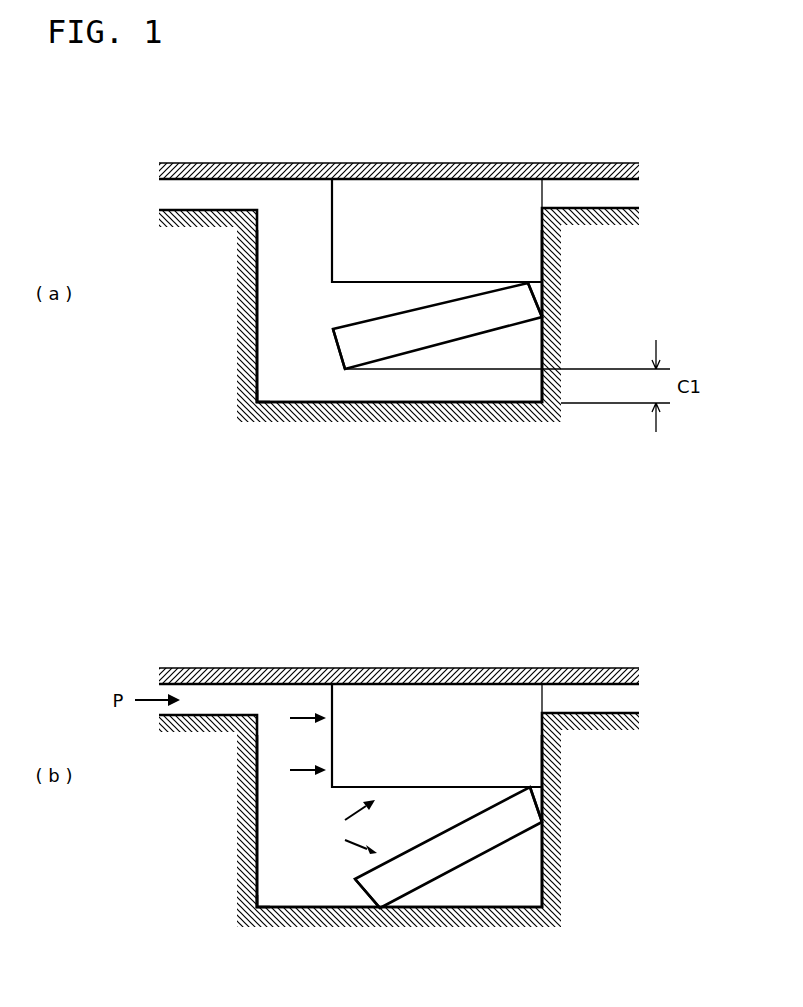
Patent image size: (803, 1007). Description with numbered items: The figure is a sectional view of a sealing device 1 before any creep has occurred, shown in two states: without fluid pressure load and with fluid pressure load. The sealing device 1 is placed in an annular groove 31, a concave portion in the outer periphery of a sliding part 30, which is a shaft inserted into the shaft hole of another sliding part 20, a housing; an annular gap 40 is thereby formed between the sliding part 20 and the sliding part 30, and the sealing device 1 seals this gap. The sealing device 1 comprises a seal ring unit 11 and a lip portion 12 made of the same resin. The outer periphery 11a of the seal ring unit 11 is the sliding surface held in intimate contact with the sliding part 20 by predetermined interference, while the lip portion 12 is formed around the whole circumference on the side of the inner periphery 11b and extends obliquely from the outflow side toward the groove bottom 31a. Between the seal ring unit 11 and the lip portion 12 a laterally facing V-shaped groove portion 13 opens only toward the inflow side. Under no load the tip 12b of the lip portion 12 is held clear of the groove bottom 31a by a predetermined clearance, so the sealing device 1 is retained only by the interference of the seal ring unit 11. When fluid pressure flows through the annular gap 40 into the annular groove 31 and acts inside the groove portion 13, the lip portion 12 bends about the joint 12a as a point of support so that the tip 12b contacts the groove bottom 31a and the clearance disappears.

The sealing device 1 is at (524, 145).
The seal ring unit 11 is at (428, 190).
The outer periphery 11a is at (360, 190).
The inner periphery 11b is at (340, 283).
The lip portion 12 is at (422, 342).
The joint 12a is at (533, 283).
The tip 12b is at (338, 350).
The groove portion 13 is at (338, 309).
The sliding part 20 is at (303, 112).
The sliding part 30 is at (142, 328).
The annular groove 31 is at (277, 344).
The groove bottom 31a is at (283, 401).
The annular gap 40 is at (214, 190).